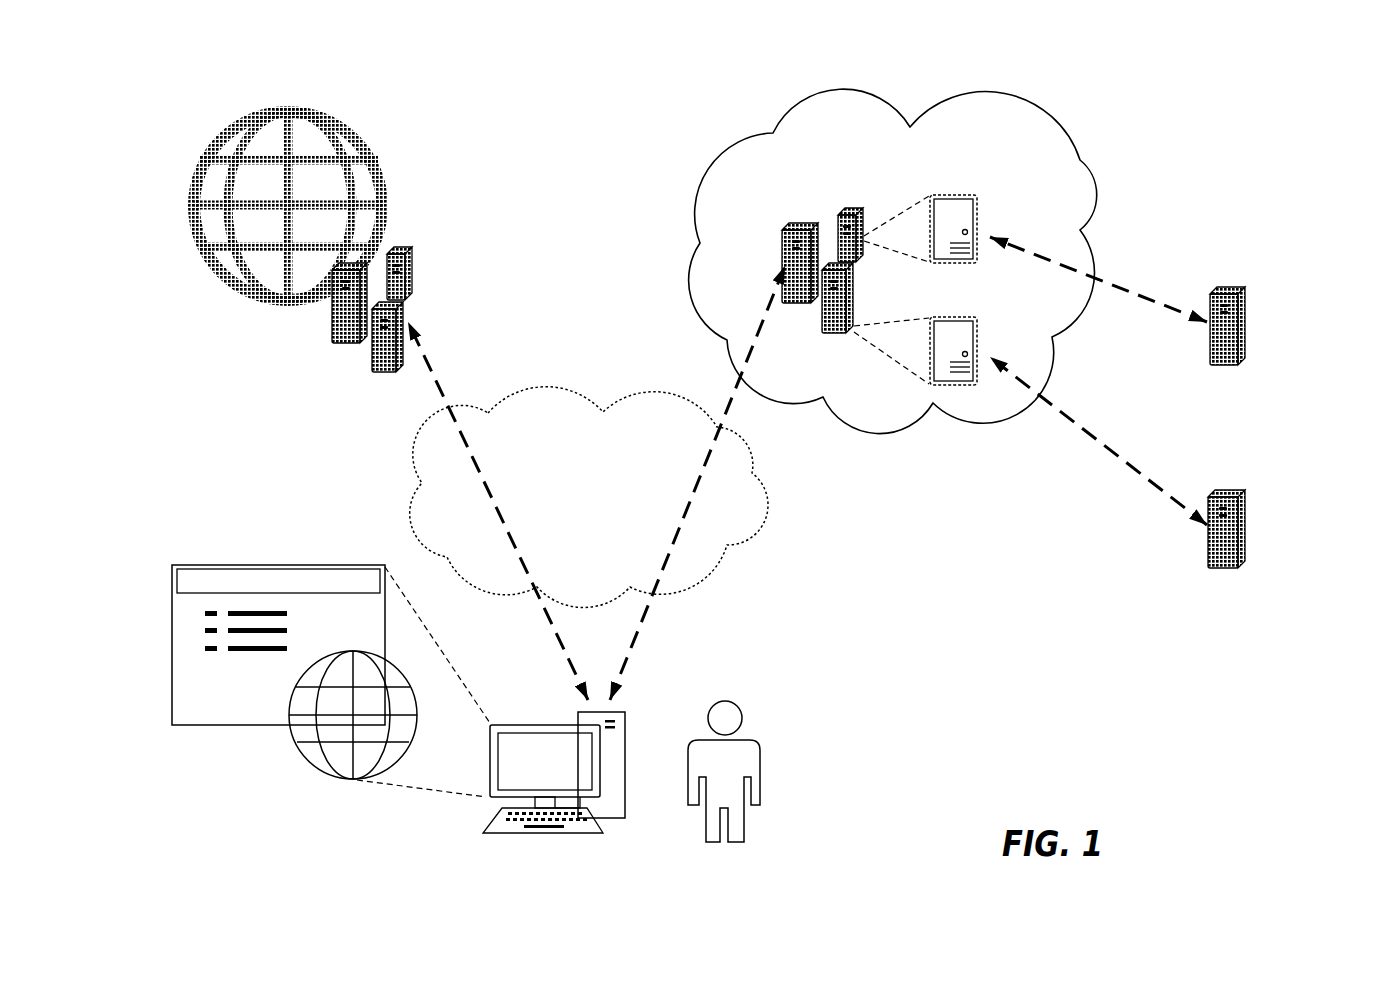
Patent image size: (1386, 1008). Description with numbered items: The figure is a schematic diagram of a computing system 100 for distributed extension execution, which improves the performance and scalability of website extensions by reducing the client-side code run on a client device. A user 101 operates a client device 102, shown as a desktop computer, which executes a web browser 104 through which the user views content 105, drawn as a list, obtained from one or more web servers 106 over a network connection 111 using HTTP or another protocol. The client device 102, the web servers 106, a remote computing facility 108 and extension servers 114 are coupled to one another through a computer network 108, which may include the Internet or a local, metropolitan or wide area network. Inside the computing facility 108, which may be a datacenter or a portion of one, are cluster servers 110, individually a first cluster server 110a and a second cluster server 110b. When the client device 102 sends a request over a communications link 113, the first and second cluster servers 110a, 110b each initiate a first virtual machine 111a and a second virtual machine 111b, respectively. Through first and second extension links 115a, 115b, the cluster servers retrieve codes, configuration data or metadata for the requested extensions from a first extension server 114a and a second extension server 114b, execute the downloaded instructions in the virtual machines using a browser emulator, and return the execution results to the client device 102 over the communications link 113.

The computing system 100 is at (1274, 146).
The user 101 is at (762, 752).
The client device 102 is at (628, 722).
The web browser 104 is at (169, 619).
The content 105 is at (312, 639).
The web servers 106 is at (415, 250).
The computer network / computing facility 108 is at (597, 511).
The cluster servers 110 is at (838, 273).
The first cluster server 110a is at (807, 199).
The second cluster server 110b is at (872, 307).
The network connection 111 is at (440, 371).
The first virtual machine 111a is at (988, 211).
The second virtual machine 111b is at (988, 333).
The communications link 113 is at (680, 524).
The extension servers 114 is at (1279, 438).
The first extension server 114a is at (1248, 301).
The second extension server 114b is at (1247, 504).
The first extension link 115a is at (1128, 289).
The second extension link 115b is at (1067, 423).